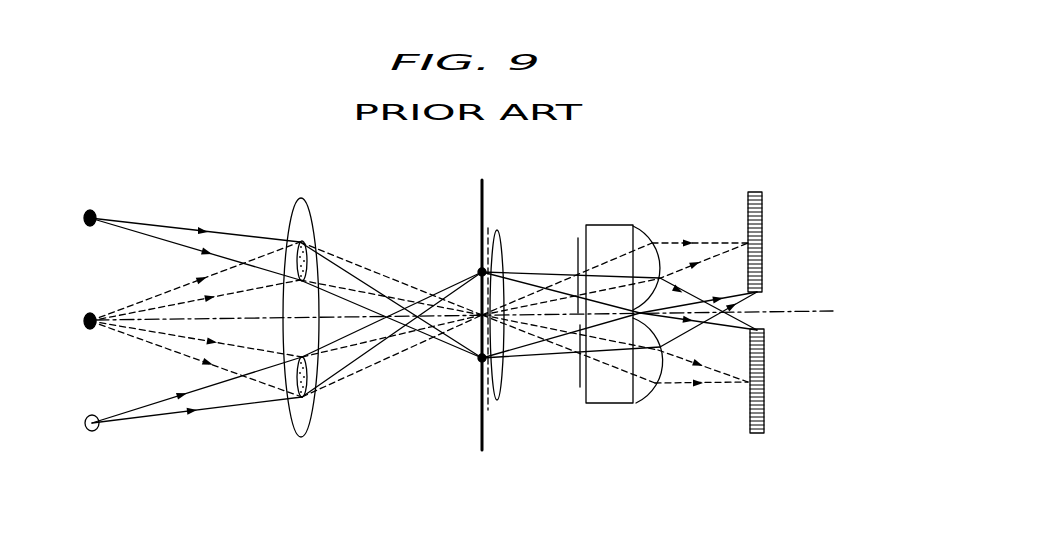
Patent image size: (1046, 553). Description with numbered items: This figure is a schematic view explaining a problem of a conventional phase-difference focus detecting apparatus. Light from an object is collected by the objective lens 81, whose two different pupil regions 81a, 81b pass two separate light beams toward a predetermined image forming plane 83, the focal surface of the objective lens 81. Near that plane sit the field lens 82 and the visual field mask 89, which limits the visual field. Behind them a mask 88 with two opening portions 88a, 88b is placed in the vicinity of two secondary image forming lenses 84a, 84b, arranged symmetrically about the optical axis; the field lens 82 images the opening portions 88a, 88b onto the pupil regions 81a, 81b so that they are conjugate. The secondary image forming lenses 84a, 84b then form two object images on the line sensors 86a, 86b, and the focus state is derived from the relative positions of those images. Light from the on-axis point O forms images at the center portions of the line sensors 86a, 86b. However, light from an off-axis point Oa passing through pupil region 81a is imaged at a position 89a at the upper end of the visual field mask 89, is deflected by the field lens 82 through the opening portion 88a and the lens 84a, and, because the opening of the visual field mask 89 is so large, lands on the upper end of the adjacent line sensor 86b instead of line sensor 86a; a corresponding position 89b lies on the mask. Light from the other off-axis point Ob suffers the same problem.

The point on the optical axis O is at (87, 330).
The point located off the optical axis Oa is at (93, 435).
The point located outside the optical axis Ob is at (85, 210).
The objective lens 81 is at (303, 433).
The pupil region 81a is at (297, 390).
The pupil region 81b is at (297, 245).
The field lens 82 is at (490, 228).
The predetermined image forming plane 83 is at (497, 408).
The secondary image forming lens 84a is at (647, 238).
The secondary image forming lens 84b is at (643, 387).
The line sensor 86a is at (757, 190).
The line sensor 86b is at (755, 435).
The mask 88 is at (578, 387).
The opening portion 88a is at (577, 282).
The opening portion 88b is at (575, 340).
The visual field mask 89 is at (483, 433).
The position at the upper end of the visual field mask 89a is at (480, 268).
The position on the visual field mask 89b is at (480, 363).